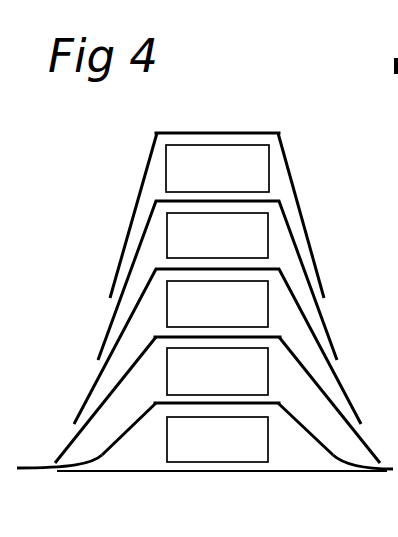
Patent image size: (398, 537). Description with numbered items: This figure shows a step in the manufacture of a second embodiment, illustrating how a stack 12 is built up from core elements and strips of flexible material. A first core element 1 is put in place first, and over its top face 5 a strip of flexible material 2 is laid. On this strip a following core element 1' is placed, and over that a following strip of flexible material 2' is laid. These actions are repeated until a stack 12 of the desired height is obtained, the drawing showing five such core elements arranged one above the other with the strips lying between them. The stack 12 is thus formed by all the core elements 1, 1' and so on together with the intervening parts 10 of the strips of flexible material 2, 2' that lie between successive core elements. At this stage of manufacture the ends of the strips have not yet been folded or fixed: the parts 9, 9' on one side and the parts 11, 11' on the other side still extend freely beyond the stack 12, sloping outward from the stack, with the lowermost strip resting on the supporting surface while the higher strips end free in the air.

The first core element 1 is at (197, 464).
The following core element 1' is at (156, 365).
The strip of flexible material 2 is at (205, 456).
The following strip of flexible material 2' is at (217, 379).
The top face 5 is at (254, 404).
The freely extending part of strip 9 is at (59, 483).
The freely extending part of following strip 9' is at (98, 400).
The intervening part of strip 10 is at (218, 133).
The freely extending part of strip 11 is at (348, 484).
The freely extending part of following strip 11' is at (329, 379).
The stack 12 is at (298, 121).